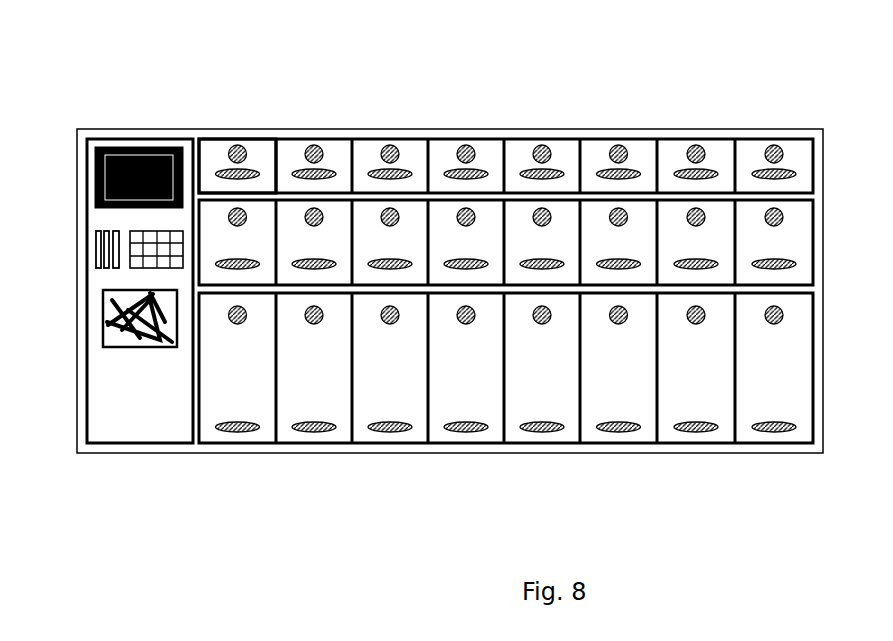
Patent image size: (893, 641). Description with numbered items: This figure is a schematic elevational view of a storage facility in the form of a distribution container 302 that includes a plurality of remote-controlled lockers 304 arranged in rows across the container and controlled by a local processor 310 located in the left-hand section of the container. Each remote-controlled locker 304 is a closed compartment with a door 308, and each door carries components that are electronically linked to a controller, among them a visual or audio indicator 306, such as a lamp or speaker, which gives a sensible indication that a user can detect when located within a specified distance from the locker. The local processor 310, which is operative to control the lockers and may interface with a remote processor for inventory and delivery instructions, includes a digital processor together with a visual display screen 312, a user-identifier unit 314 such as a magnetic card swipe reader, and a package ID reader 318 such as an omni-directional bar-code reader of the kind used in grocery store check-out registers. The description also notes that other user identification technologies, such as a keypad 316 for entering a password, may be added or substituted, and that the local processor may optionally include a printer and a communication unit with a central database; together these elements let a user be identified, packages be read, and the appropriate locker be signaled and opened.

The distribution container 302 is at (428, 455).
The remote-controlled locker 304 is at (262, 148).
The visual or audio indicator 306 is at (392, 152).
The door 308 is at (532, 170).
The local processor 310 is at (130, 140).
The visual display screen 312 is at (100, 193).
The user-identifier unit 314 is at (95, 264).
The keypad grid 316 is at (132, 270).
The package ID reader 318 is at (128, 337).